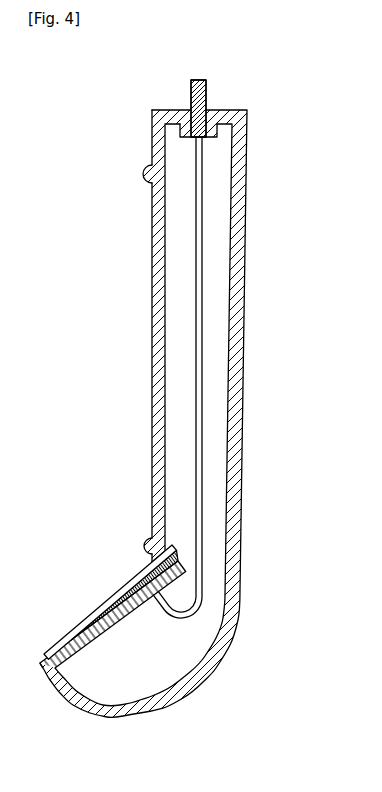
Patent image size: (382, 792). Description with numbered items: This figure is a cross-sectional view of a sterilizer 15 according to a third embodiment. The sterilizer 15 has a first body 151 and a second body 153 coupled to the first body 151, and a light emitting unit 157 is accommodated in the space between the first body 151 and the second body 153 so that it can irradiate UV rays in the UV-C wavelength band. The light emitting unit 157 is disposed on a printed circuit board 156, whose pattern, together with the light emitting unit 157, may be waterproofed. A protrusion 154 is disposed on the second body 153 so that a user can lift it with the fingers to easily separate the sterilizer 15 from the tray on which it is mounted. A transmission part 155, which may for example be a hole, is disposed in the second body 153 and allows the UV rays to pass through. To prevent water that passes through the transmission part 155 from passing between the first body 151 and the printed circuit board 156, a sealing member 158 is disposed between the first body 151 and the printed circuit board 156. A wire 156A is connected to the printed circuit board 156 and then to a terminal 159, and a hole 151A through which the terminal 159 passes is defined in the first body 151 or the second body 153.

The sterilizer 15 is at (171, 411).
The first body 151 is at (240, 190).
The hole 151A is at (211, 117).
The second body 153 is at (157, 227).
The protrusion 154 is at (143, 173).
The transmission part 155 is at (105, 602).
The printed circuit board 156 is at (98, 653).
The wire 156A is at (198, 573).
The light emitting unit 157 is at (174, 681).
The sealing member 158 is at (47, 674).
The terminal 159 is at (206, 93).